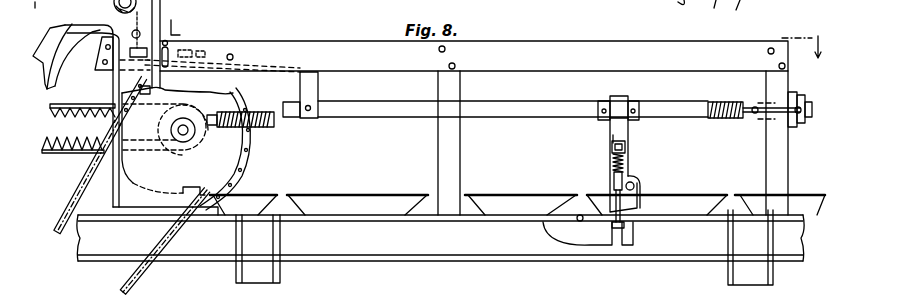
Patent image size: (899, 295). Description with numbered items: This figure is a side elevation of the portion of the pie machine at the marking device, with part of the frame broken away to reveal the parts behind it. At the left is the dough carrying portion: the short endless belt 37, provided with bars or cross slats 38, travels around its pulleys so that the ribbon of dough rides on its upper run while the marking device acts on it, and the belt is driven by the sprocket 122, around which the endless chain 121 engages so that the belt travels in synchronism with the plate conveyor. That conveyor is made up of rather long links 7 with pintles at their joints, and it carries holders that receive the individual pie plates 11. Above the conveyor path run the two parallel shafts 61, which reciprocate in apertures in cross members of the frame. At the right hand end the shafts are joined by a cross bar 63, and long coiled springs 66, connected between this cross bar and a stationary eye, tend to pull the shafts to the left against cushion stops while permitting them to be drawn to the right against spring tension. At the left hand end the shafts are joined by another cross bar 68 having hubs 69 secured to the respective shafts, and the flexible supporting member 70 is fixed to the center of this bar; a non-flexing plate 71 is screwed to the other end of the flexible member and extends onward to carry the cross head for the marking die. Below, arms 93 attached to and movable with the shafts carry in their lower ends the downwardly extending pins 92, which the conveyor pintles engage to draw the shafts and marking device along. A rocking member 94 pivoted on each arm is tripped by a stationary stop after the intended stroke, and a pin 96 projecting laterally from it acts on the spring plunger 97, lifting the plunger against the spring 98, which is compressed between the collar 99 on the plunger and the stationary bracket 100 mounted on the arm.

The links 7 is at (428, 34).
The pie plates 11 is at (380, 193).
The endless belt 37 is at (73, 103).
The bars or cross slats 38 is at (75, 140).
The parallel shafts 61 is at (517, 120).
The cross bar 63 is at (810, 90).
The coiled springs 66 is at (723, 100).
The cross bar 68 is at (320, 92).
The hubs 69 is at (305, 120).
The flexible supporting member 70 is at (262, 60).
The plate 71 is at (170, 52).
The pins 92 is at (619, 228).
The arms 93 is at (630, 149).
The rocking member 94 is at (641, 190).
The pin 96 is at (614, 205).
The spring plunger 97 is at (612, 143).
The spring 98 is at (626, 163).
The collar 99 is at (612, 178).
The stationary bracket 100 is at (625, 135).
The endless chain 121 is at (145, 272).
The sprocket 122 is at (198, 141).